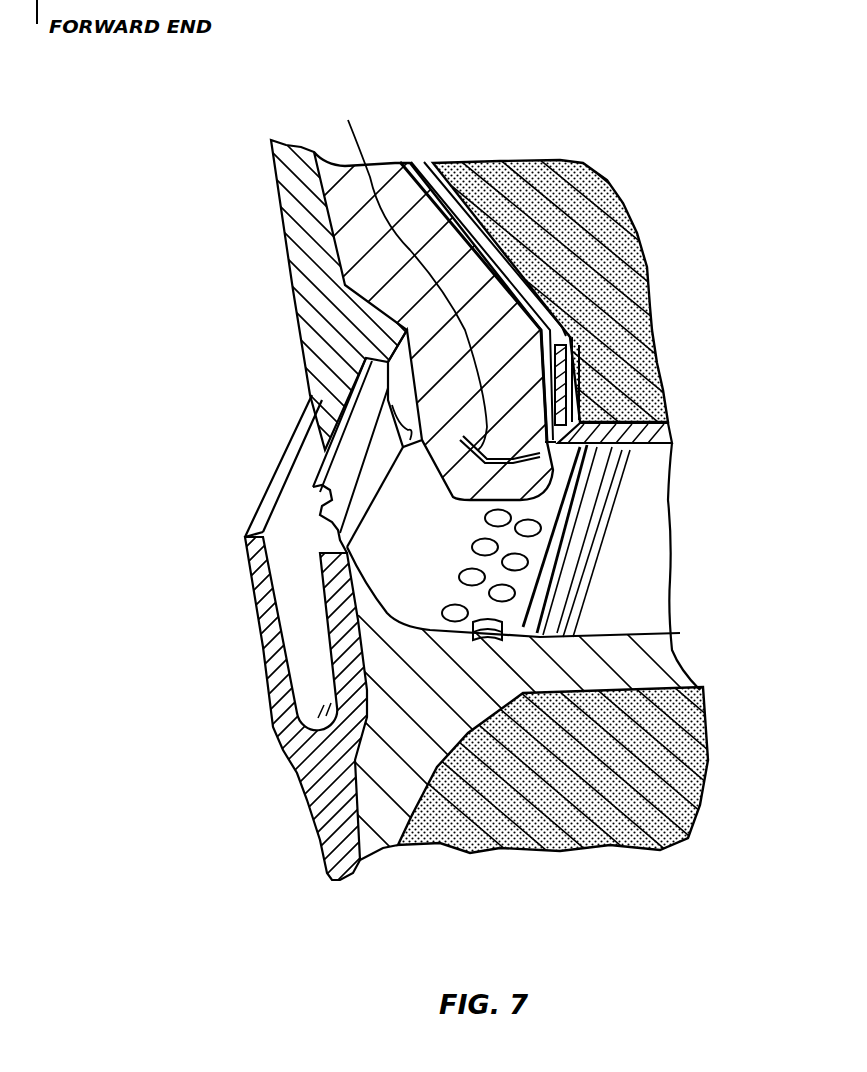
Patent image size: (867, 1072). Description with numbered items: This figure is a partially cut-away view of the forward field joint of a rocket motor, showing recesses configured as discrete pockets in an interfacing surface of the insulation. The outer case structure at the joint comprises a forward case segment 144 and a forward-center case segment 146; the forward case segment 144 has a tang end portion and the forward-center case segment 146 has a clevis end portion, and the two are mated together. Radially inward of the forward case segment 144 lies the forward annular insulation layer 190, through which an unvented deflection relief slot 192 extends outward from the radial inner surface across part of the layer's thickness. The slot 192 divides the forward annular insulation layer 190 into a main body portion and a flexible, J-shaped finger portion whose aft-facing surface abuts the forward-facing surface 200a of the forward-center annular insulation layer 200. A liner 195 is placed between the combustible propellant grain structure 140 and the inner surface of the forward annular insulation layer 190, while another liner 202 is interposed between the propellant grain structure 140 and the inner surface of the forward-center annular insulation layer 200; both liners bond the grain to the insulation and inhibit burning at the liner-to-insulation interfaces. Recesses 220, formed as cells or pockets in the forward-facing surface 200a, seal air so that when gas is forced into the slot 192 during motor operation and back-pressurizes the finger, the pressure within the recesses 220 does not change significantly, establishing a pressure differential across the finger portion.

The combustible propellant grain structure 140 is at (600, 224).
The forward case segment 144 is at (290, 205).
The forward-center case segment 146 is at (327, 788).
The forward annular insulation layer 190 is at (348, 122).
The unvented deflection relief slot 192 is at (480, 310).
The liner 195 is at (582, 400).
The forward-center annular insulation layer 200 is at (380, 820).
The forward-facing surface 200a is at (540, 515).
The liner 202 is at (440, 840).
The recesses 220 is at (518, 560).